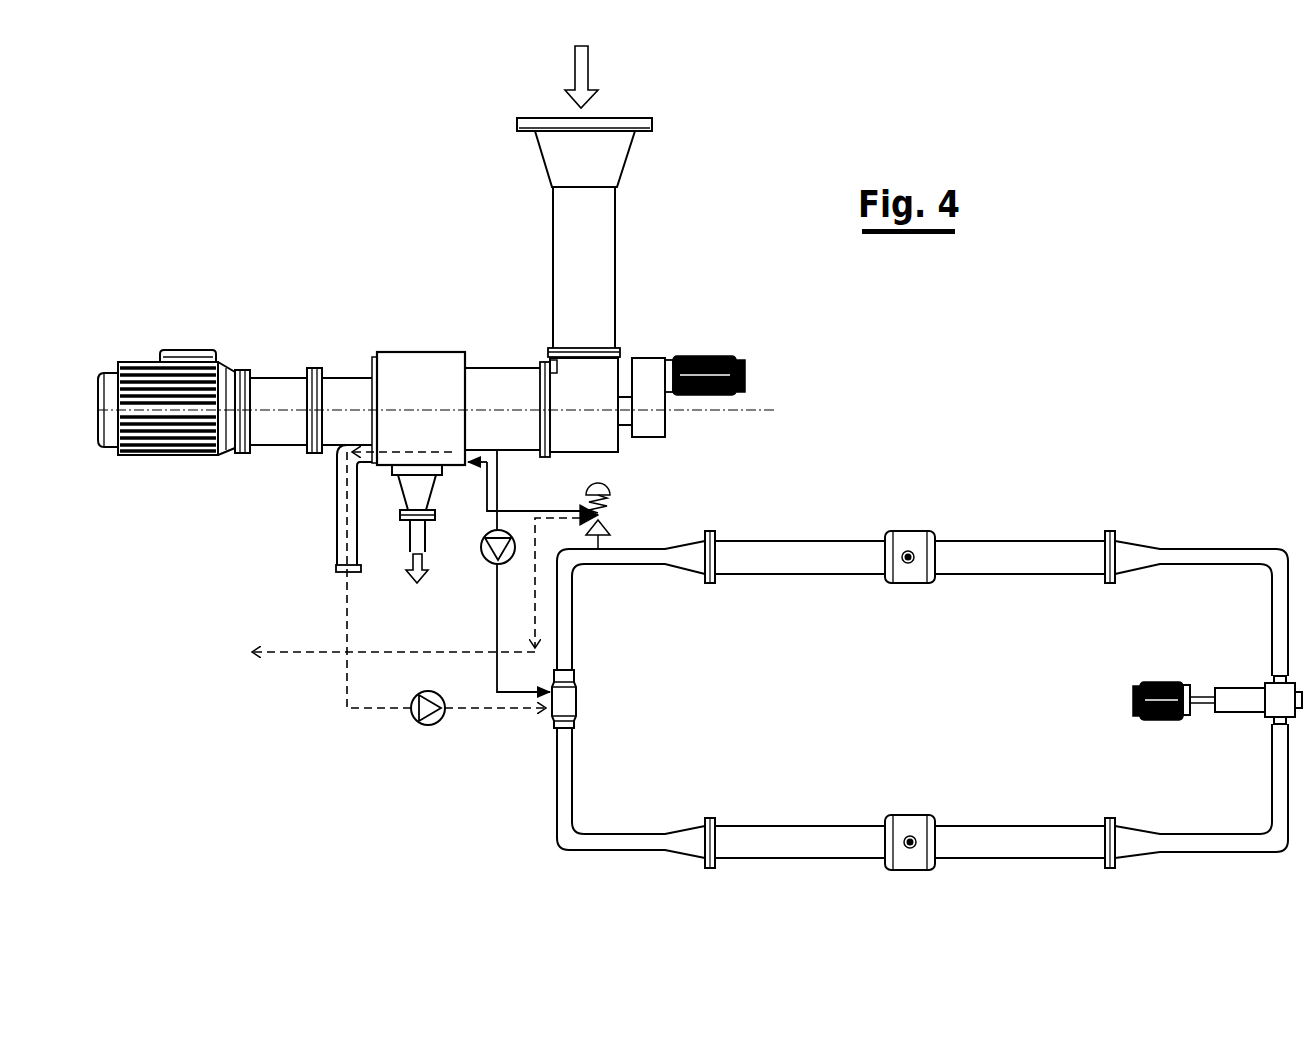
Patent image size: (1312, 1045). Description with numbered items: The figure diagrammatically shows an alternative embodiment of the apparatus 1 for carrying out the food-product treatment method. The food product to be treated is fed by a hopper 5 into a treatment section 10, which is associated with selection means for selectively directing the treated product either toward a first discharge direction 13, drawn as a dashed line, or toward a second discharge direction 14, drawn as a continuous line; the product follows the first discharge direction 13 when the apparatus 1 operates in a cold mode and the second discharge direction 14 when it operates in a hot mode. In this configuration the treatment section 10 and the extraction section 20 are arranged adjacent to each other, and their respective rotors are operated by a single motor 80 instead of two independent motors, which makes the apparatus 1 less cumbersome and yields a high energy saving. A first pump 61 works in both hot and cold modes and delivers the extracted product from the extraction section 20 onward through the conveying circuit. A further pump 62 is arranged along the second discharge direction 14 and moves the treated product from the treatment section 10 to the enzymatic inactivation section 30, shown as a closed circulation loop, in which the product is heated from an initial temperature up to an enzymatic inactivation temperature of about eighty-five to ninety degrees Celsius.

The apparatus 1 is at (708, 226).
The hopper 5 is at (653, 122).
The treatment section 10 is at (507, 355).
The first discharge direction 13 is at (402, 450).
The second discharge direction 14 is at (503, 489).
The extraction section 20 is at (416, 340).
The enzymatic inactivation section 30 is at (1004, 502).
The first pump 61 is at (445, 722).
The pump 62 is at (490, 563).
The single motor 80 is at (101, 351).